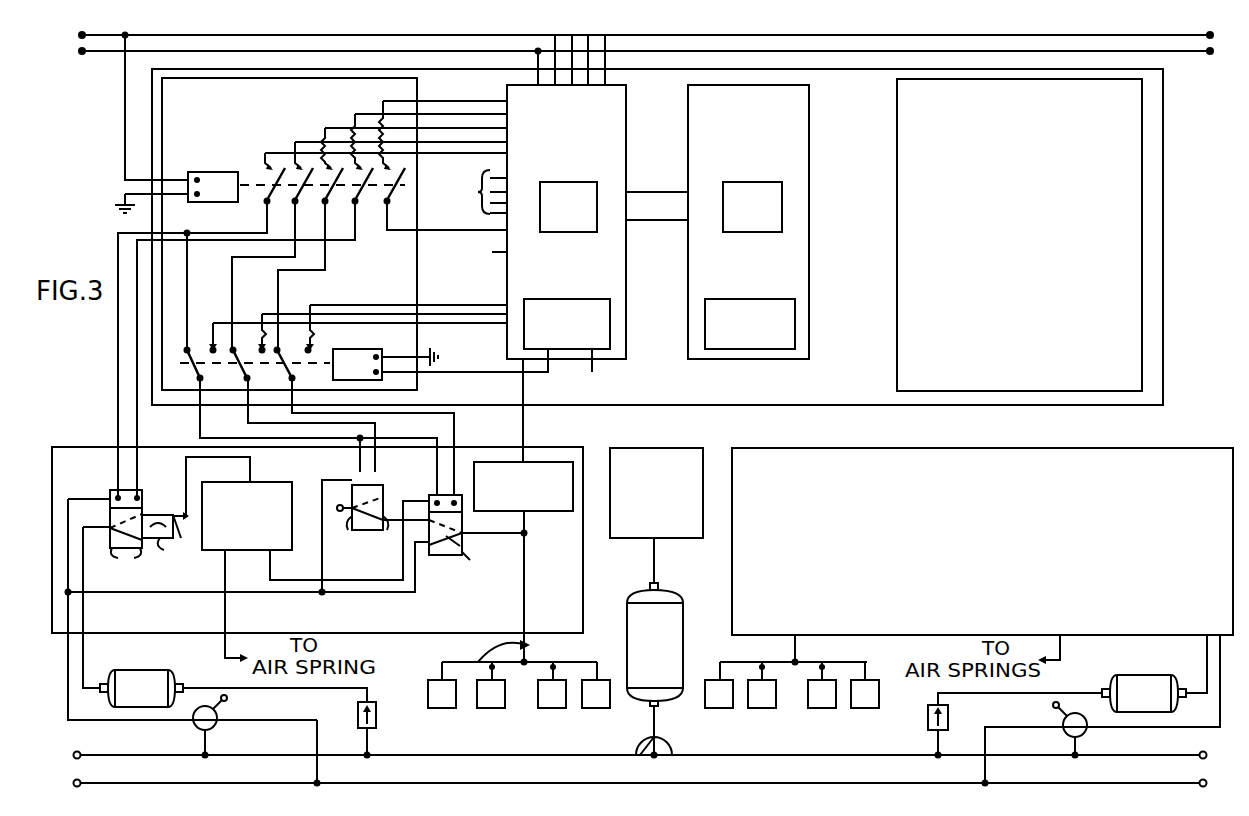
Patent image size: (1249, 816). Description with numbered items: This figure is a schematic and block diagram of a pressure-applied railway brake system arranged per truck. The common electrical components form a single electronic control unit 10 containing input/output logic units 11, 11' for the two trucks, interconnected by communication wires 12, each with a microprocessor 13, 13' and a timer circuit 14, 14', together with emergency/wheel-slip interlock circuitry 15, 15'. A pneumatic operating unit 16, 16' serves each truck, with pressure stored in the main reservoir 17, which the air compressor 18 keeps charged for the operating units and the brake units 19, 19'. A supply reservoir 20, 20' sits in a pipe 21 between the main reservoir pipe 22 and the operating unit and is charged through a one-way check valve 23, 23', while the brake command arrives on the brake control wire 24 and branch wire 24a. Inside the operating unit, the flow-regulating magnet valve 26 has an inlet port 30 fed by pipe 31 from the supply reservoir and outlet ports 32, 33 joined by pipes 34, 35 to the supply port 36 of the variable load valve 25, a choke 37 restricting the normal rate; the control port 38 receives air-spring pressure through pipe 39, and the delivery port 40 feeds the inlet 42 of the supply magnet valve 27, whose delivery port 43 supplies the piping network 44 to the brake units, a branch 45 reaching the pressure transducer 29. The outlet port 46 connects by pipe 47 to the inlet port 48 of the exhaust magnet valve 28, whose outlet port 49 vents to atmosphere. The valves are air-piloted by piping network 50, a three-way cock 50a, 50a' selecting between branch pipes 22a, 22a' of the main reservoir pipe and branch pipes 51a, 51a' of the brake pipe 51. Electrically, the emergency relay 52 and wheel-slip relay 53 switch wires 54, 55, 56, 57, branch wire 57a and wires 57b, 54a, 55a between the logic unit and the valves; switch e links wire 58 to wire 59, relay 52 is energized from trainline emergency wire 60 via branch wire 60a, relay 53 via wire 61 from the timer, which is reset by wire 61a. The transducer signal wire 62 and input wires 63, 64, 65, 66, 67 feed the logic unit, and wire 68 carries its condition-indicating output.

The electronic control unit 10 is at (657, 237).
The input/output logic unit 11 is at (566, 222).
The input/output logic unit 11' is at (748, 222).
The communication wires 12 is at (662, 200).
The microprocessor 13 is at (568, 207).
The microprocessor 13' is at (752, 207).
The timer circuit 14 is at (567, 324).
The timer circuit 14' is at (750, 324).
The emergency/wheel-slip interlock circuitry 15 is at (289, 234).
The emergency/wheel-slip interlock circuitry 15' is at (1019, 235).
The pneumatic operating unit 16 is at (317, 540).
The pneumatic operating unit 16' is at (982, 541).
The main reservoir 17 is at (655, 648).
The air compressor 18 is at (656, 493).
The brake units 19 is at (519, 700).
The brake units 19' is at (792, 686).
The supply reservoir 20 is at (141, 688).
The supply reservoir 20' is at (1154, 673).
The pipe 21 is at (276, 688).
The main reservoir pipe 22 is at (126, 754).
The branch pipe 22a is at (232, 740).
The branch pipe 22a' is at (1048, 741).
The one-way check valve 23 is at (353, 730).
The one-way check valve 23' is at (1015, 726).
The brake control wire 24 is at (262, 51).
The branch wire 24a is at (538, 84).
The variable load valve 25 is at (276, 490).
The flow-regulating magnet valve 26 is at (110, 558).
The supply magnet valve 27 is at (481, 568).
The exhaust magnet valve 28 is at (358, 560).
The pressure transducer 29 is at (523, 497).
The inlet port 30 is at (110, 526).
The pipe 31 is at (84, 650).
The outlet port 32 is at (144, 496).
The outlet port 33 is at (130, 558).
The pipe 34 is at (174, 538).
The pipe 35 is at (164, 550).
The supply port 36 is at (244, 486).
The choke 37 is at (164, 514).
The control port 38 is at (234, 562).
The pipe 39 is at (222, 650).
The delivery port 40 is at (276, 560).
The inlet 42 is at (422, 550).
The delivery port 43 is at (469, 548).
The piping network 44 is at (526, 536).
The branch 45 is at (526, 526).
The outlet port 46 is at (428, 508).
The pipe 47 is at (390, 510).
The inlet port 48 is at (383, 536).
The outlet port 49 is at (343, 539).
The piping network 50 is at (94, 496).
The three-way cock 50a is at (187, 727).
The three-way cock 50a' is at (1098, 730).
The brake pipe 51 is at (118, 782).
The branch pipe 51a is at (296, 753).
The branch pipe 51a' is at (1101, 711).
The emergency relay 52 is at (260, 194).
The wheel-slip relay 53 is at (385, 364).
The wire 54 is at (310, 136).
The wire 54a is at (296, 314).
The wire 55 is at (336, 118).
The wire 55a is at (390, 306).
The wire 56 is at (364, 98).
The wire 57 is at (264, 155).
The branch wire 57a is at (198, 428).
The wire 57b is at (343, 338).
The wire 58 is at (433, 101).
The wire 59 is at (466, 235).
The trainline emergency wire 60 is at (206, 35).
The branch wire 60a is at (122, 114).
The wire 61 is at (498, 378).
The wire 61a is at (592, 368).
The signal wire 62 is at (526, 428).
The wires 63 is at (476, 192).
The wire 64 is at (520, 47).
The wire 65 is at (567, 32).
The wire 66 is at (598, 30).
The wire 67 is at (612, 76).
The wire 68 is at (496, 257).